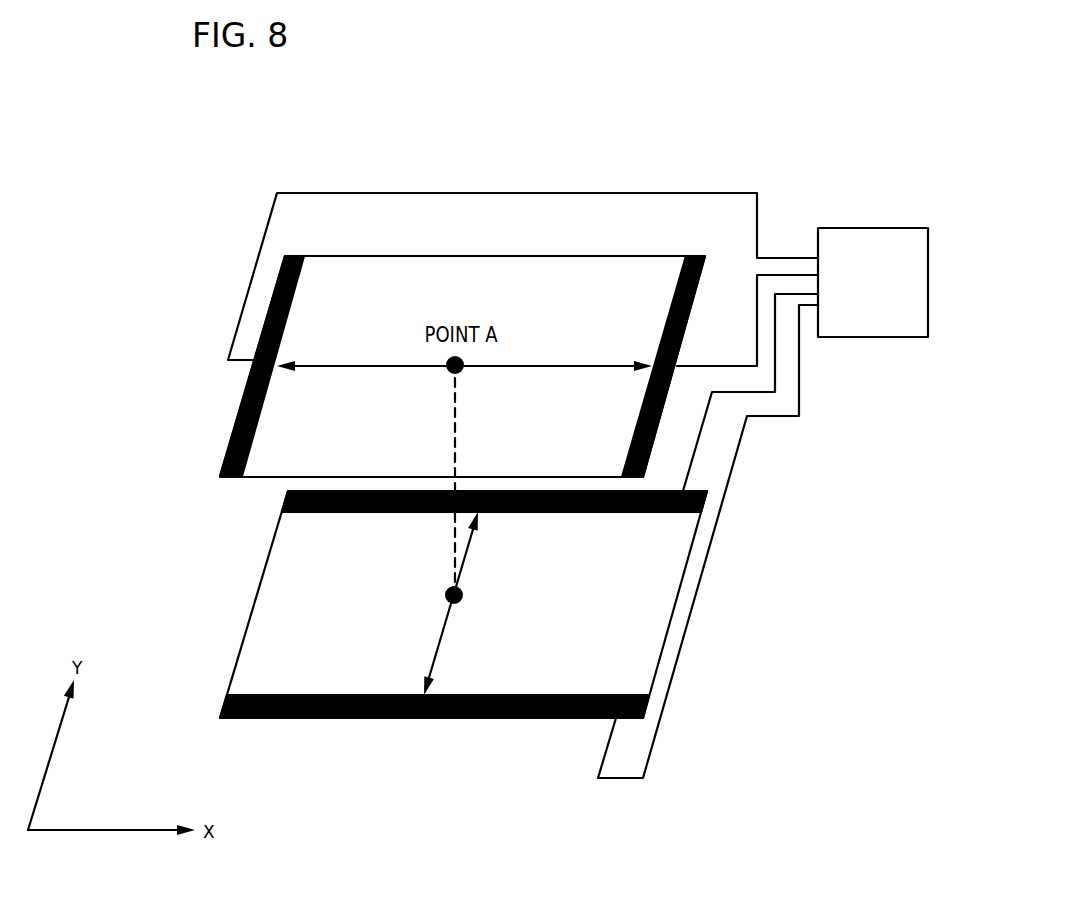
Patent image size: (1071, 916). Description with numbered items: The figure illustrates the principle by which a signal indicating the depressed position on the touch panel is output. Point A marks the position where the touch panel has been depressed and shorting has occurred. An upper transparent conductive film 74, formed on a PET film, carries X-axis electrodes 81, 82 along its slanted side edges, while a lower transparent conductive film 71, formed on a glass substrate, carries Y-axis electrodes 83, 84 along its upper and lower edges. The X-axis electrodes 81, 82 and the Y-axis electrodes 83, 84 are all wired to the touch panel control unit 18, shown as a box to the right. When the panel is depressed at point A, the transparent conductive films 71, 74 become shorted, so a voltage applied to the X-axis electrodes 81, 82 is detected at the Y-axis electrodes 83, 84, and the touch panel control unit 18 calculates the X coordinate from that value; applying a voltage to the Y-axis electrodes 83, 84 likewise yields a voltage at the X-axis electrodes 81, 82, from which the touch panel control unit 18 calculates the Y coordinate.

The touch panel control unit 18 is at (882, 227).
The transparent conductive film 71 is at (288, 613).
The transparent conductive film 74 is at (465, 277).
The X-axis electrode 81 is at (275, 293).
The X-axis electrode 82 is at (698, 255).
The Y-axis electrode 83 is at (224, 698).
The Y-axis electrode 84 is at (285, 493).